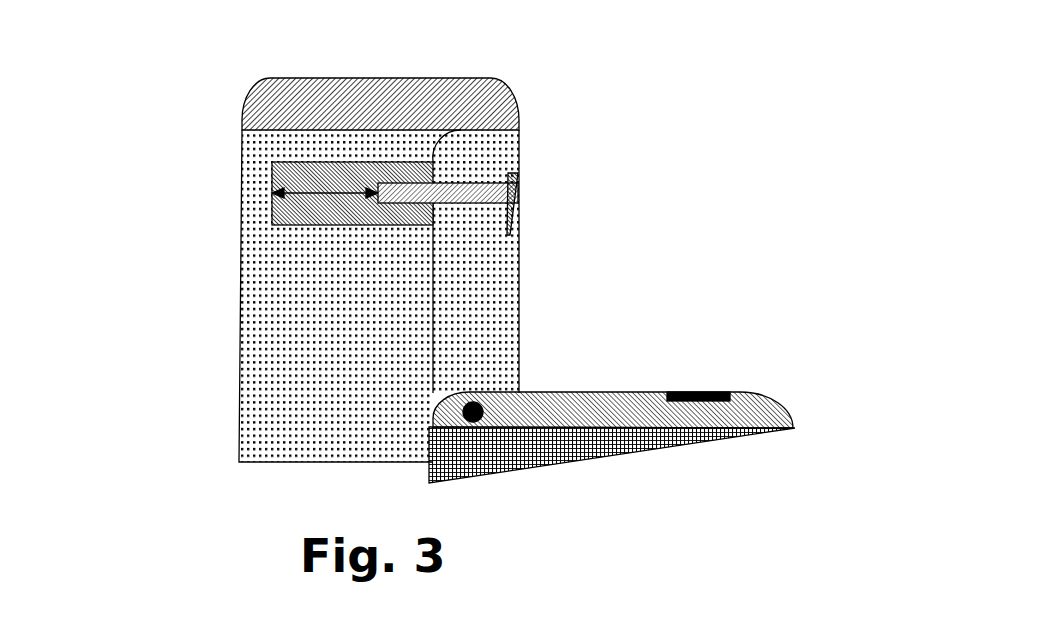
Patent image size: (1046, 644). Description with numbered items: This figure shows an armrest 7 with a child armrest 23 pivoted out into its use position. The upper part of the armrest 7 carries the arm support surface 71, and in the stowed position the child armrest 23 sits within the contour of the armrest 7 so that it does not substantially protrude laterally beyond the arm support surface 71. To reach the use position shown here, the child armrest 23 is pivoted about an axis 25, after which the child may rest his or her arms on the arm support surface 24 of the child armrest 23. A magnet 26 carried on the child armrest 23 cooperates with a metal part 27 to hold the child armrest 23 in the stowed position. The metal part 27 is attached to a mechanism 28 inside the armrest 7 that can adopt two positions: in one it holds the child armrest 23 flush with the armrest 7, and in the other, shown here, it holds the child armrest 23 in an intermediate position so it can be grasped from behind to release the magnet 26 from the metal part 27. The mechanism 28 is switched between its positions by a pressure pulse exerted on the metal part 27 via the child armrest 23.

The armrest 7 is at (322, 285).
The arm support surface 71 is at (500, 113).
The mechanism 28 is at (284, 169).
The metal part 27 is at (518, 183).
The axis 25 is at (482, 402).
The arm support surface 24 is at (619, 379).
The magnet 26 is at (708, 391).
The child armrest 23 is at (527, 448).